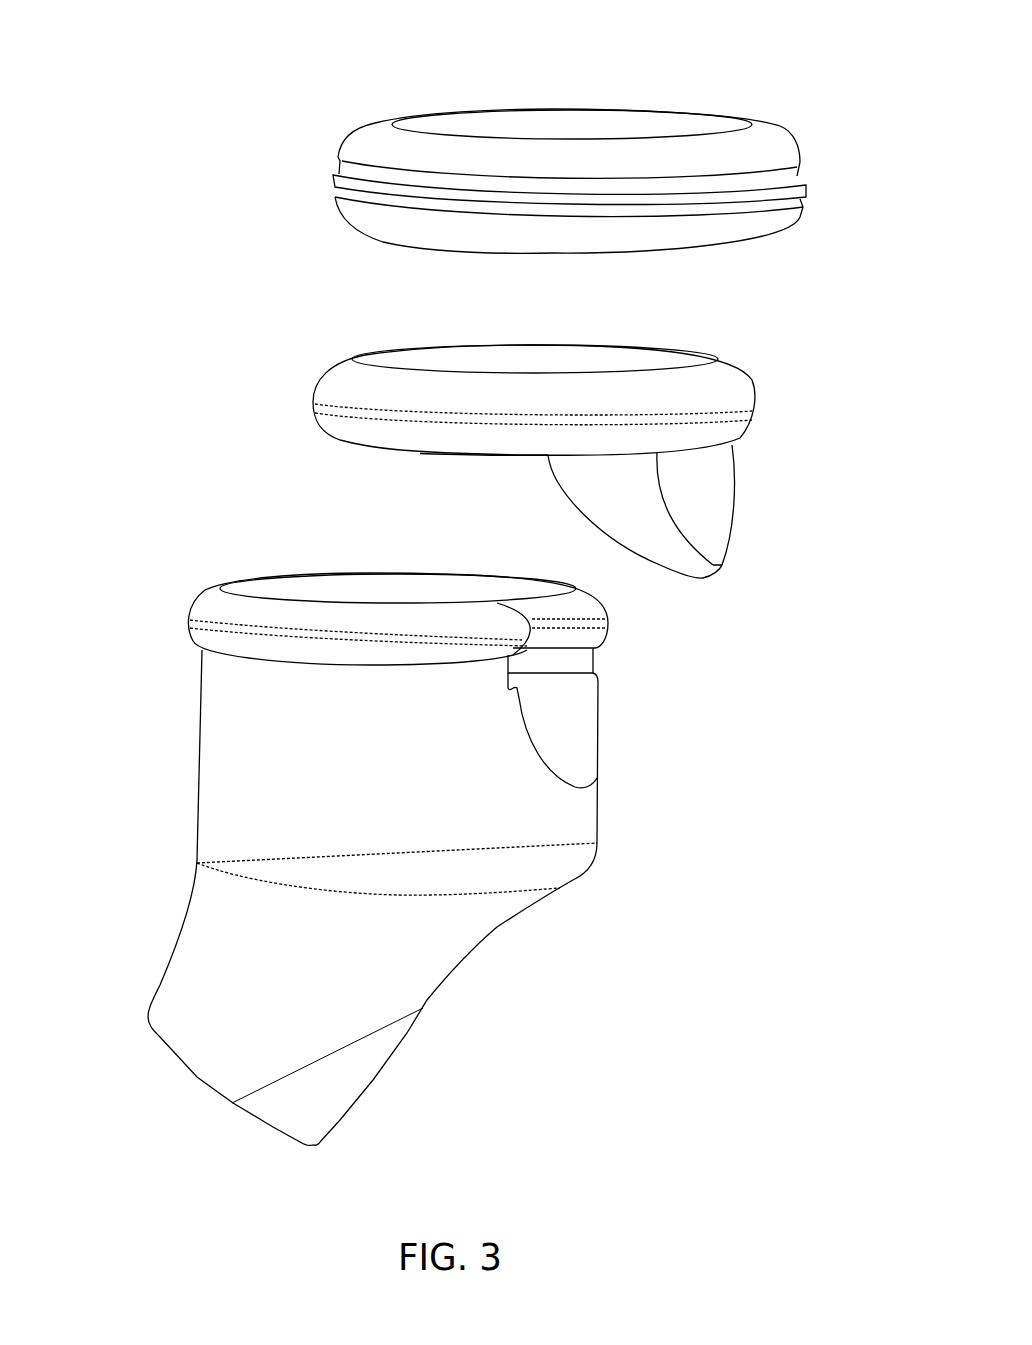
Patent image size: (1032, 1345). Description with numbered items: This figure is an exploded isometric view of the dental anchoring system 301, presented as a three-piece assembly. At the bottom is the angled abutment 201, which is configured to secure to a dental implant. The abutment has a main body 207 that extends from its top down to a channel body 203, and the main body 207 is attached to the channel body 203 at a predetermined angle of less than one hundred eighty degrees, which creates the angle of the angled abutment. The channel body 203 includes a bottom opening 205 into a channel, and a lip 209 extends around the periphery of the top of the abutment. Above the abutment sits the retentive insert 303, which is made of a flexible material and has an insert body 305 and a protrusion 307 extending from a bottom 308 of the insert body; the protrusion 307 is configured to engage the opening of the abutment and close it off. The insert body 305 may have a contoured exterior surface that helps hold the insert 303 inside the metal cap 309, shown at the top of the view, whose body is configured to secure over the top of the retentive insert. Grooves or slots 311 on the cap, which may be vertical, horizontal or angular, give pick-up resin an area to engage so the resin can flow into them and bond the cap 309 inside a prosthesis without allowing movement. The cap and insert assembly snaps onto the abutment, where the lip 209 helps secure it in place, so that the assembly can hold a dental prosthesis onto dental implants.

The angled abutment 201 is at (168, 563).
The channel body 203 is at (178, 935).
The bottom opening 205 is at (182, 1082).
The main body 207 is at (196, 752).
The lip 209 is at (192, 602).
The system 301 is at (760, 73).
The retentive insert 303 is at (290, 358).
The insert body 305 is at (755, 390).
The protrusion 307 is at (738, 490).
The bottom of the insert body 308 is at (397, 470).
The metal cap 309 is at (322, 143).
The grooves/slots 311 is at (810, 185).